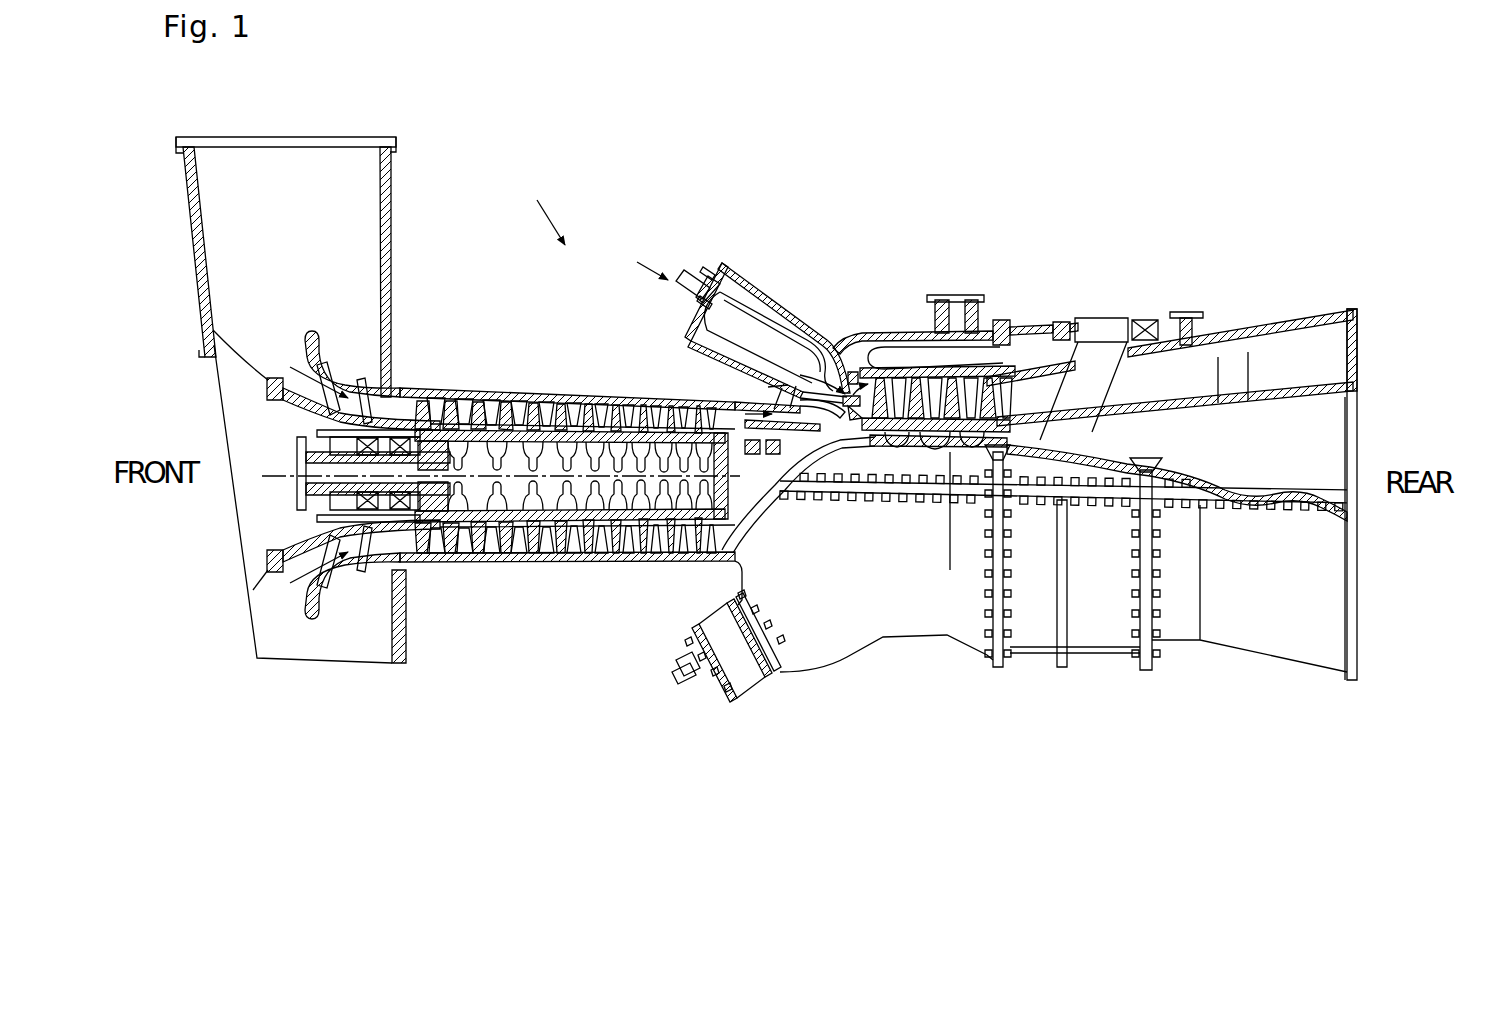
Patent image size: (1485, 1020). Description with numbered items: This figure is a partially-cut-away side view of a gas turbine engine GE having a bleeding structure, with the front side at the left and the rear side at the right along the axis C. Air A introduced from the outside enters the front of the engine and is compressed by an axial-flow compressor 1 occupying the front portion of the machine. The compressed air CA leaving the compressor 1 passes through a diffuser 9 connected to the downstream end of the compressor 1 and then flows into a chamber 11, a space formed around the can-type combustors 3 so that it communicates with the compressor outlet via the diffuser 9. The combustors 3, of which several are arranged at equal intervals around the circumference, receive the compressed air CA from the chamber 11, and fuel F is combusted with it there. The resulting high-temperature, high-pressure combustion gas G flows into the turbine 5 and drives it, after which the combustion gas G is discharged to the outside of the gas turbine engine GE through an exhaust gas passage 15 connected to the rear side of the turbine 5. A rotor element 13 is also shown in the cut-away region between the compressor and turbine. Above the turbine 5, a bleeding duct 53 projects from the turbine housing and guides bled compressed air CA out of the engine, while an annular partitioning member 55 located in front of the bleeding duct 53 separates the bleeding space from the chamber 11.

The compressor 1 is at (577, 578).
The combustor 3 is at (748, 272).
The turbine 5 is at (913, 368).
The diffuser 9 is at (748, 385).
The chamber 11 is at (848, 365).
The rotor shaft 13 is at (860, 418).
The exhaust gas passage 15 is at (1192, 372).
The bleeding duct 53 is at (976, 313).
The partitioning member 55 is at (860, 398).
The air A is at (282, 108).
The axis C is at (279, 470).
The compressed air CA is at (758, 403).
The fuel F is at (637, 262).
The combustion gas G is at (843, 350).
The gas turbine engine GE is at (539, 206).